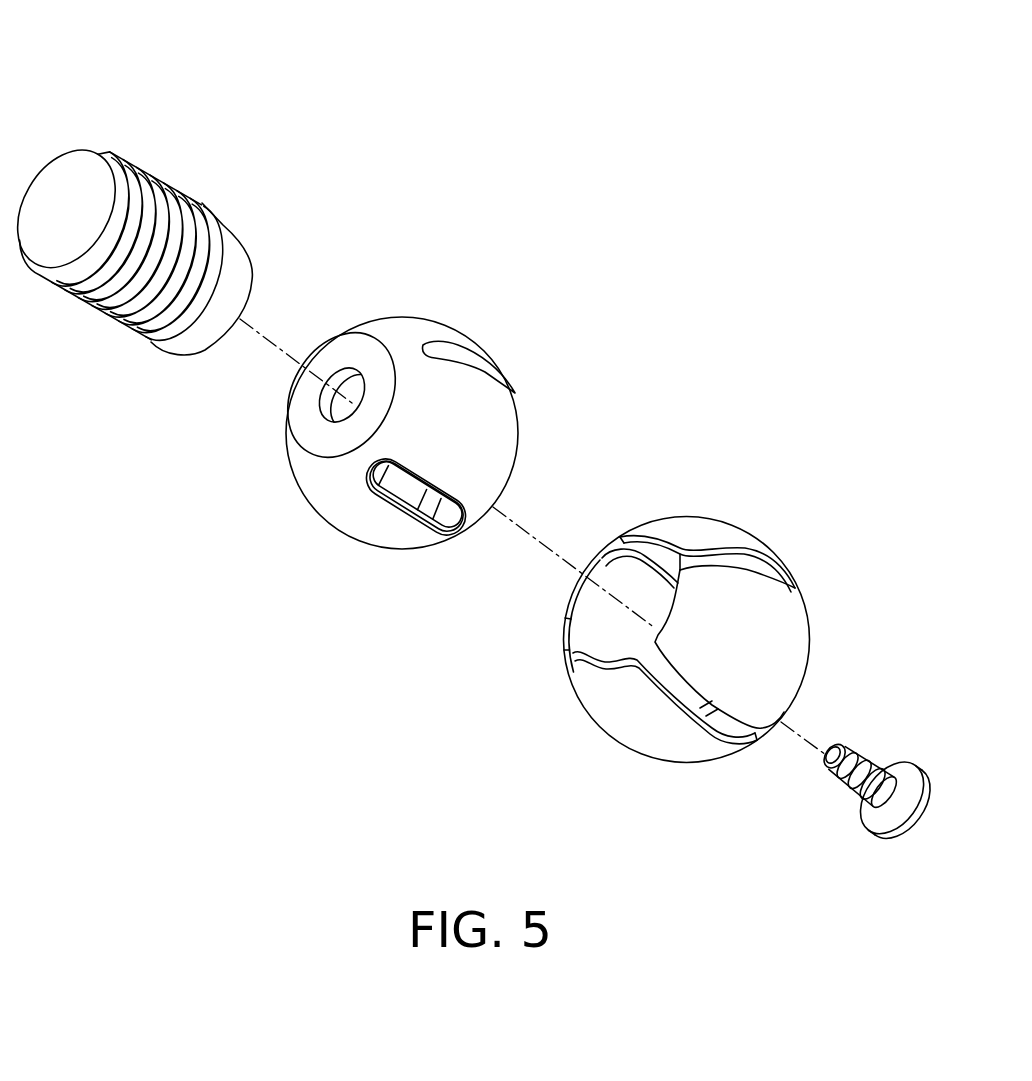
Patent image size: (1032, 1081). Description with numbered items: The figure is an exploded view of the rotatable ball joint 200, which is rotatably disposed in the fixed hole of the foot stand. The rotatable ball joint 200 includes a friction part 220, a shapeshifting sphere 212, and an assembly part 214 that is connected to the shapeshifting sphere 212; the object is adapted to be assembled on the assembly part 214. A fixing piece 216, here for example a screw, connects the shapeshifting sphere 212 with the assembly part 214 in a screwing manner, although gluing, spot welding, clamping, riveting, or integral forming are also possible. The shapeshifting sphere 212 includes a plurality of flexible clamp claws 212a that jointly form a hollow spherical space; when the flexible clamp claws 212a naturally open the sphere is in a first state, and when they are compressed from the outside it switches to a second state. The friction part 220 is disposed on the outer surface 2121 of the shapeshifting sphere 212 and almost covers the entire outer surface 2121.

The rotatable ball joint 200 is at (308, 117).
The assembly part 214 is at (202, 203).
The shapeshifting sphere 212 is at (484, 421).
The flexible clamp claws 212a is at (461, 328).
The outer surface 2121 is at (503, 457).
The friction part 220 is at (770, 610).
The fixing piece 216 is at (908, 772).